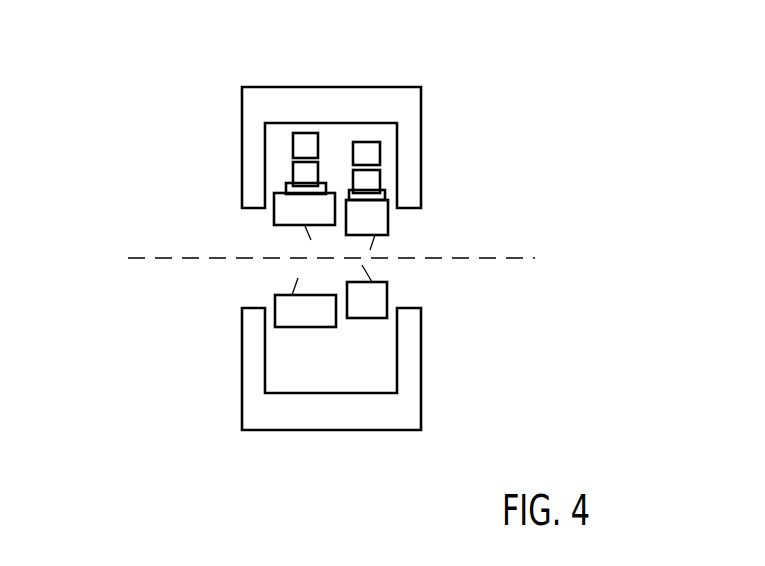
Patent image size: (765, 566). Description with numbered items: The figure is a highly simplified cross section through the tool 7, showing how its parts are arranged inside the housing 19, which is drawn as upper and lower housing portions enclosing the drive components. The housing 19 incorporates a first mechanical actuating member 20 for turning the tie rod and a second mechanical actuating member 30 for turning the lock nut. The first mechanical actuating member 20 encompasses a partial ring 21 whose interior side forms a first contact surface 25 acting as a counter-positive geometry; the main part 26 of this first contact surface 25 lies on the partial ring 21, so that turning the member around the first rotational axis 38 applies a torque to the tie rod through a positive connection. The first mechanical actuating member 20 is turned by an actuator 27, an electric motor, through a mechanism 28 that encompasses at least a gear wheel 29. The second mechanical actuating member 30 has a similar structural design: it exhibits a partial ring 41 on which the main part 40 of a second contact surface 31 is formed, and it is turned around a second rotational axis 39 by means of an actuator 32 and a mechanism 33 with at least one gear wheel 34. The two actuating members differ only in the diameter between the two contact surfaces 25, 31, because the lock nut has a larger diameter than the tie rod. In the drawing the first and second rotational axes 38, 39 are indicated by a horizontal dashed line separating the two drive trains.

The tool 7 is at (519, 368).
The housing 19 is at (332, 98).
The first mechanical actuating member 20 is at (430, 266).
The partial ring 21 is at (377, 210).
The first contact surface 25 is at (438, 265).
The main part 26 is at (375, 235).
The actuator 27 is at (368, 149).
The mechanism 28 is at (432, 184).
The gear wheel 29 is at (368, 178).
The second mechanical actuating member 30 is at (242, 264).
The second contact surface 31 is at (229, 263).
The actuator 32 is at (302, 147).
The mechanism 33 is at (237, 175).
The gear wheel 34 is at (302, 173).
The first rotational axis 38 is at (309, 234).
The second rotational axis 39 is at (208, 257).
The main part 40 is at (305, 226).
The partial ring 41 is at (287, 213).